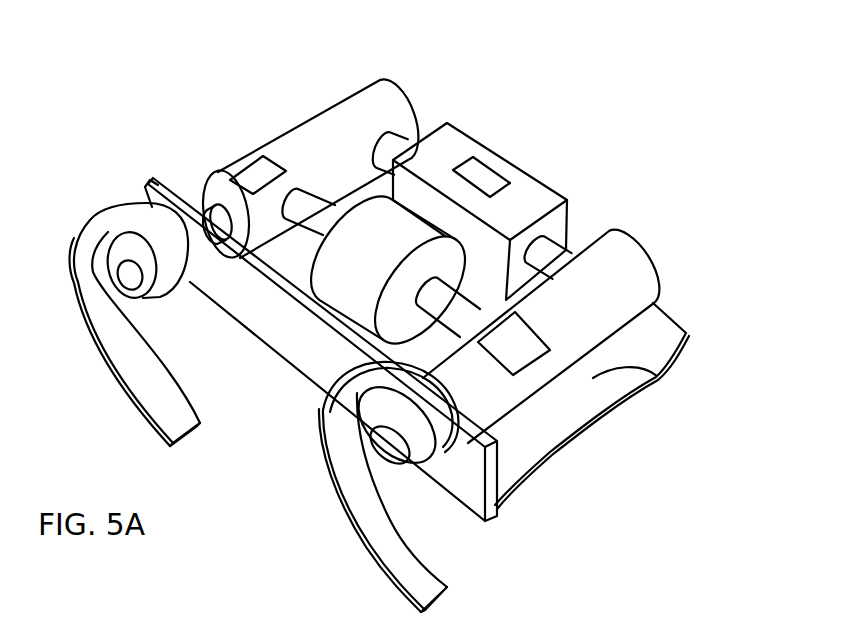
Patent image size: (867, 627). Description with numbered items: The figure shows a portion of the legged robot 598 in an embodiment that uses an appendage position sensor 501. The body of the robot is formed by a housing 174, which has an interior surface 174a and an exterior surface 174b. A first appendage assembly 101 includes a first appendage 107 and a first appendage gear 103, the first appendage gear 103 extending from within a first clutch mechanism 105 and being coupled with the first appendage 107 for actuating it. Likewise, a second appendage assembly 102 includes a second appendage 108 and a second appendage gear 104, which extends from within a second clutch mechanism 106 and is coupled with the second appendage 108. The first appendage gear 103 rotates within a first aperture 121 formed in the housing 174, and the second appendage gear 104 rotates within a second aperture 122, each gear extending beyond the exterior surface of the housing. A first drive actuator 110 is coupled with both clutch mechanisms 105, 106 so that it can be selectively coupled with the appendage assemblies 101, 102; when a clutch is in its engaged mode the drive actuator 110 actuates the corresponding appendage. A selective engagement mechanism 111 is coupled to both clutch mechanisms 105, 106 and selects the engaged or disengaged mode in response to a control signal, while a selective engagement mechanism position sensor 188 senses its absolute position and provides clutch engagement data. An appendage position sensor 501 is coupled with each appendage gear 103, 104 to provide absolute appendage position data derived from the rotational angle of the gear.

The portion of the legged robot 598 is at (569, 126).
The interior surface 174a is at (147, 190).
The exterior surface 174b is at (163, 192).
The housing 174 is at (657, 376).
The second appendage gear 104 is at (195, 208).
The first appendage gear 103 is at (482, 403).
The second aperture 122 is at (212, 276).
The first aperture 121 is at (478, 436).
The second appendage assembly 102 is at (93, 343).
The first appendage assembly 101 is at (334, 505).
The second appendage 108 is at (170, 424).
The first appendage 107 is at (418, 582).
The second clutch mechanism 106 is at (316, 157).
The first clutch mechanism 105 is at (643, 267).
The appendage position sensor 501 is at (250, 173).
The first drive actuator 110 is at (327, 300).
The selective engagement mechanism 111 is at (570, 212).
The selective engagement mechanism position sensor 188 is at (487, 167).